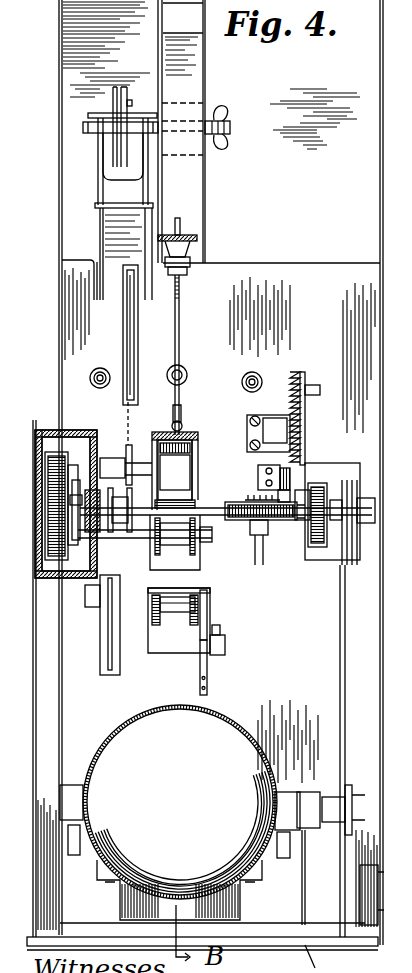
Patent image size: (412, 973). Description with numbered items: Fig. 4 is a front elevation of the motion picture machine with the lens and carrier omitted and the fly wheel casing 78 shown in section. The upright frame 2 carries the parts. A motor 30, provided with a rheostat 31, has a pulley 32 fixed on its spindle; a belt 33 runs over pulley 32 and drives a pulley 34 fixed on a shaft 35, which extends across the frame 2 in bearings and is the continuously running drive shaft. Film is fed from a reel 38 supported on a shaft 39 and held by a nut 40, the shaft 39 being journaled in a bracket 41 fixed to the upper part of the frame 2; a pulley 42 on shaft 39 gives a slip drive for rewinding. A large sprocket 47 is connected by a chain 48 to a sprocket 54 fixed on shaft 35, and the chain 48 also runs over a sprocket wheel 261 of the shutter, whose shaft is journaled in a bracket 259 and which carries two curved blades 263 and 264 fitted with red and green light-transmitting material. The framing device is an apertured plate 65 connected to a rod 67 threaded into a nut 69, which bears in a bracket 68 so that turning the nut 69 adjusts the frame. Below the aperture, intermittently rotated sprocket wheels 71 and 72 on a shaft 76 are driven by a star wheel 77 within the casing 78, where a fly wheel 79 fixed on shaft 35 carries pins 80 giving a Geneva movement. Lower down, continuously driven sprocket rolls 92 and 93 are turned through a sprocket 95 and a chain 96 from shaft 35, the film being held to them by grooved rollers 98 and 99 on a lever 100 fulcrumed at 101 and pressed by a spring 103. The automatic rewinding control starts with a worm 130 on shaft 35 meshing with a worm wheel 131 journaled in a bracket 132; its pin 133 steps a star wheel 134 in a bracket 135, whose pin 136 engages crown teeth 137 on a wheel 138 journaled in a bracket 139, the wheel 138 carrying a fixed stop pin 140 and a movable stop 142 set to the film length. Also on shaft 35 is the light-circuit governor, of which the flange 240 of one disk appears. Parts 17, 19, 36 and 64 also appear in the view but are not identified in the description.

The upright frame 2 is at (356, 927).
The housing side wall 17 is at (320, 355).
The frame 19 is at (383, 255).
The motor 30 is at (228, 725).
The rheostat 31 is at (302, 888).
The pulley 32 is at (352, 818).
The belt 33 is at (340, 670).
The pulley 34 is at (358, 545).
The shaft 35 is at (195, 500).
The disk 36 is at (372, 505).
The reel 38 is at (205, 85).
The shaft 39 is at (230, 127).
The nut 40 is at (222, 149).
The bracket 41 is at (98, 183).
The pulley 42 is at (127, 100).
The large sprocket 47 is at (138, 362).
The chain 48 is at (130, 418).
The sprocket 54 is at (120, 523).
The block 64 is at (192, 455).
The apertured plate 65 is at (198, 445).
The rod 67 is at (179, 338).
The bracket 68 is at (190, 262).
The nut 69 is at (195, 238).
The sprocket wheel 71 is at (197, 550).
The sprocket wheel 72 is at (158, 555).
The shaft 76 is at (212, 535).
The star wheel 77 is at (90, 540).
The fly wheel casing 78 is at (42, 578).
The fly wheel 79 is at (47, 503).
The pins 80 is at (76, 490).
The sprocket roll 92 is at (155, 640).
The sprocket roll 93 is at (207, 622).
The sprocket 95 is at (100, 667).
The chain 96 is at (100, 640).
The grooved roller 98 is at (152, 610).
The grooved roller 99 is at (195, 600).
The lever 100 is at (198, 610).
The fulcrum 101 is at (225, 643).
The spring 103 is at (207, 668).
The worm 130 is at (258, 492).
The worm wheel 131 is at (235, 520).
The bracket 132 is at (262, 545).
The pin 133 is at (280, 478).
The star wheel 134 is at (295, 520).
The bracket 135 is at (270, 465).
The pin 136 is at (310, 465).
The crown teeth 137 is at (297, 372).
The wheel 138 is at (305, 410).
The bracket 139 is at (272, 418).
The stop pin 140 is at (305, 490).
The movable stop 142 is at (316, 385).
The flange 240 is at (318, 547).
The bracket 259 is at (108, 458).
The sprocket wheel 261 is at (132, 455).
The shutter blade 263 is at (190, 432).
The shutter blade 264 is at (180, 500).